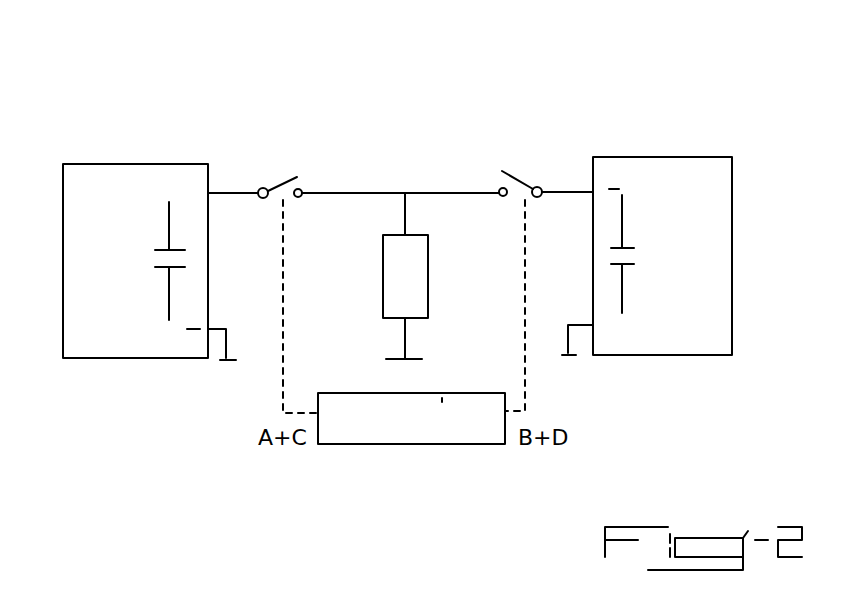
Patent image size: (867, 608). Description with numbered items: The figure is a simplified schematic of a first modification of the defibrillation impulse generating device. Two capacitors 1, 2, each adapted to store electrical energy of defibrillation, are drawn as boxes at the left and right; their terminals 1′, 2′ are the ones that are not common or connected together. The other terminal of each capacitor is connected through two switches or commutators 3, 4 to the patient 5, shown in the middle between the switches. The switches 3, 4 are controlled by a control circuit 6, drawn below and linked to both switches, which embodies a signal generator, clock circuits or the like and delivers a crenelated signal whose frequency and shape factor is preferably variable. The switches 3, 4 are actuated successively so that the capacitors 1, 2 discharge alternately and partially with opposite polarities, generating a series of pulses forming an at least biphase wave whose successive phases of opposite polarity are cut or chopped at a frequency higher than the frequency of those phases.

The capacitor 1 is at (108, 187).
The terminal 1′ is at (218, 330).
The capacitor 2 is at (660, 175).
The terminal 2′ is at (578, 328).
The switch 3 is at (277, 185).
The switch 4 is at (522, 177).
The patient 5 is at (431, 263).
The control circuit 6 is at (343, 430).